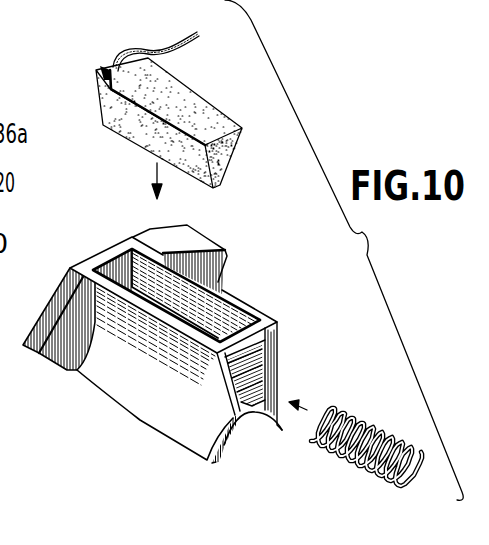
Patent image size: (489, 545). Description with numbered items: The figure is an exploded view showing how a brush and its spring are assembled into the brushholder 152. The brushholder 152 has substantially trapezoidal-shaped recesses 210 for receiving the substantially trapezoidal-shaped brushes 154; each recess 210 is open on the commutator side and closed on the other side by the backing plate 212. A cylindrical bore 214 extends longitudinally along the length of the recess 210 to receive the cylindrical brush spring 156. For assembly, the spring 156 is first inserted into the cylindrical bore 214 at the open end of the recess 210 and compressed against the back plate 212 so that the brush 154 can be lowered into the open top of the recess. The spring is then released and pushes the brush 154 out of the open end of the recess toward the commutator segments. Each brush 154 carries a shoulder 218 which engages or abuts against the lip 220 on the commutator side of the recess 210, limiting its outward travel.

The brushholder 152 is at (50, 293).
The brush 154 is at (203, 115).
The brush spring 156 is at (387, 430).
The recess 210 is at (142, 248).
The backing plate 212 is at (54, 350).
The cylindrical bore 214 is at (268, 371).
The shoulder 218 is at (105, 66).
The lip 220 is at (278, 325).